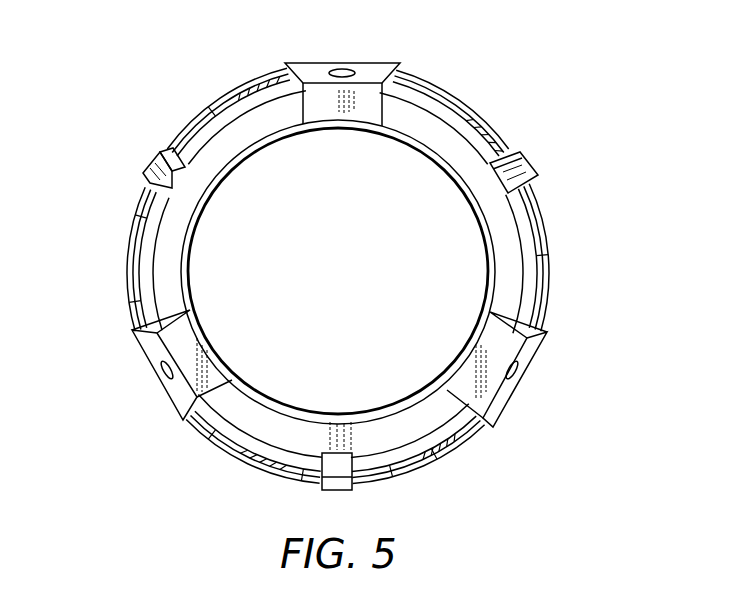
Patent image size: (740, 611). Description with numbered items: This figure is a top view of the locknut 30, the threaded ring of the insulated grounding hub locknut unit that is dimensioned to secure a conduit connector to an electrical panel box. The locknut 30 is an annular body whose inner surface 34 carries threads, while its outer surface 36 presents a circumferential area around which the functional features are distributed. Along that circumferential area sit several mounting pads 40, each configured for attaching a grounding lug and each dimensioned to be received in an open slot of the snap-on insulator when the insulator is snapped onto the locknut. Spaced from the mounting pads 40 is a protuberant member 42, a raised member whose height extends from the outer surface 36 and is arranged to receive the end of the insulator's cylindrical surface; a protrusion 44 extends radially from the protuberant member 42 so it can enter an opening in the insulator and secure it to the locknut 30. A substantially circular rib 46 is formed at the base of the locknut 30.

The locknut 30 is at (538, 121).
The inner surface 34 is at (220, 192).
The outer surface 36 is at (148, 259).
The mounting pads 40 is at (372, 73).
The protuberant member 42 is at (172, 150).
The protrusion 44 is at (145, 165).
The circular rib 46 is at (228, 440).